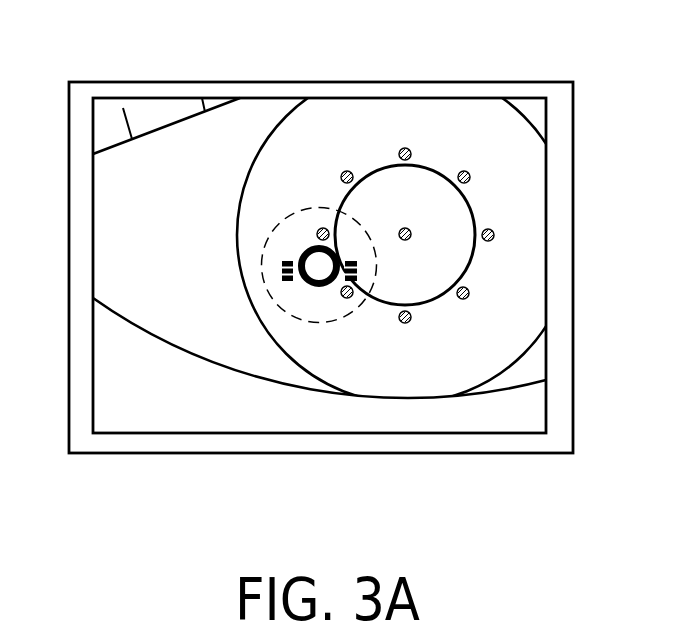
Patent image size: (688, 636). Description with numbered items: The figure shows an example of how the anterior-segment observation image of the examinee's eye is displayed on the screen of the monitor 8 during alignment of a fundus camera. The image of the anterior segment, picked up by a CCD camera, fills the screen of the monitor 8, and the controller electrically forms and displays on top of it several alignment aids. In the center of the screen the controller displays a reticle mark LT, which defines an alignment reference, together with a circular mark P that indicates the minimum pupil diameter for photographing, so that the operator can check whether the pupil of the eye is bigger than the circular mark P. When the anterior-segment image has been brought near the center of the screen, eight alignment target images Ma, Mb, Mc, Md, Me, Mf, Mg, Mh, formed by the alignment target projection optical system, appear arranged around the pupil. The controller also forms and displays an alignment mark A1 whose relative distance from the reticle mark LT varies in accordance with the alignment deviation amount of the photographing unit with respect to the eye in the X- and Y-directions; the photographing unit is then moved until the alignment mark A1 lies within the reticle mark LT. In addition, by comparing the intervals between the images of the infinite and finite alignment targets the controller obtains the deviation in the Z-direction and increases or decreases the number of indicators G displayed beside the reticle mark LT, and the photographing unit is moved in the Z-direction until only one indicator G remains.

The monitor 8 is at (164, 82).
The circular mark P is at (279, 218).
The reticle mark LT is at (303, 282).
The indicator G is at (276, 271).
The alignment mark A1 is at (411, 231).
The alignment target image Ma is at (494, 234).
The alignment target image Mb is at (467, 171).
The alignment target image Mc is at (405, 148).
The alignment target image Md is at (345, 171).
The alignment target image Me is at (320, 228).
The alignment target image Mf is at (345, 298).
The alignment target image Mg is at (403, 323).
The alignment target image Mh is at (465, 299).